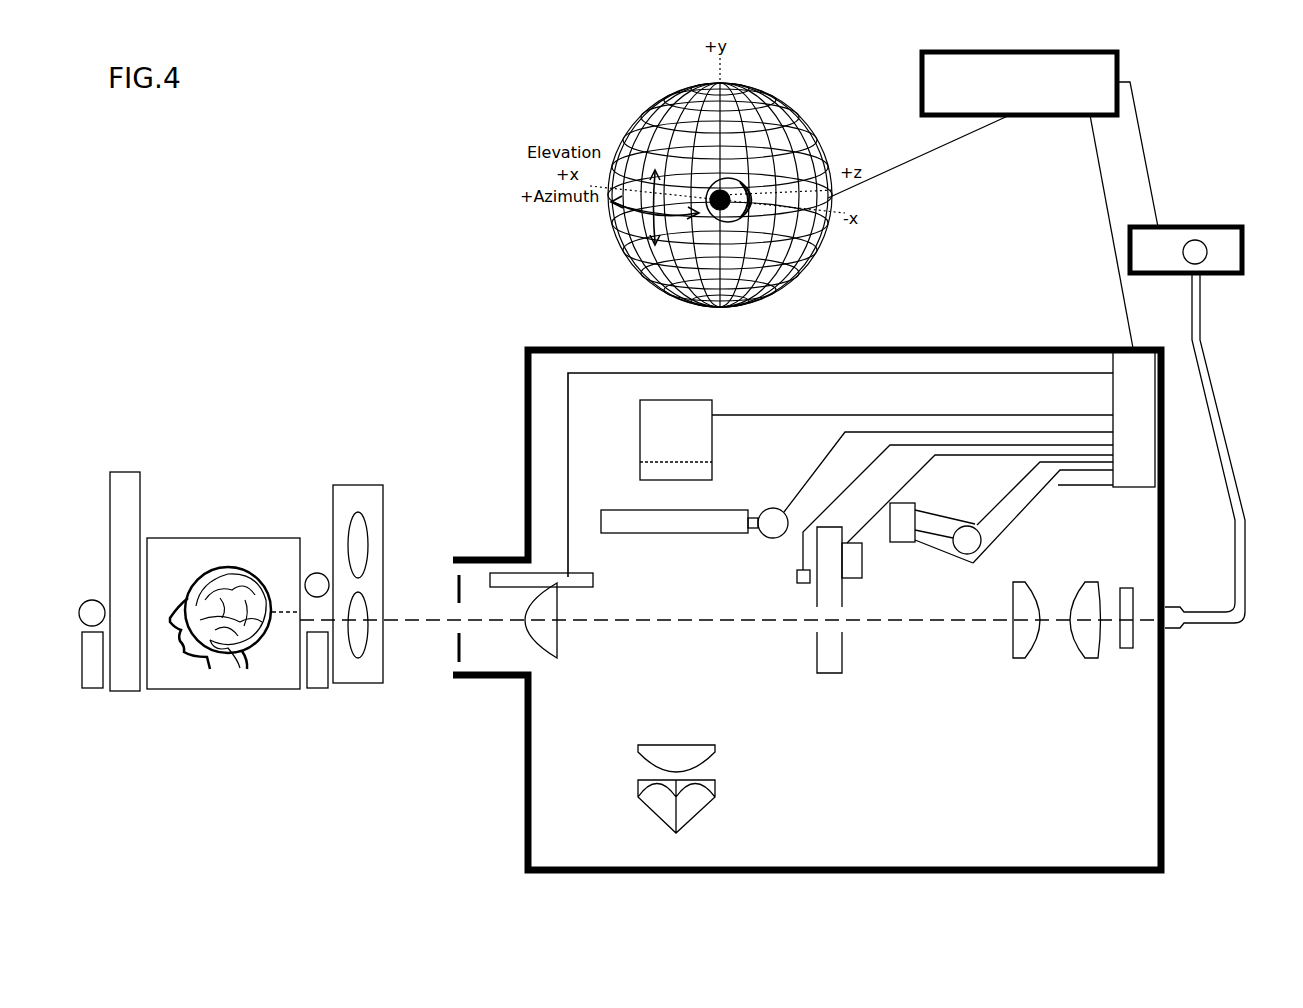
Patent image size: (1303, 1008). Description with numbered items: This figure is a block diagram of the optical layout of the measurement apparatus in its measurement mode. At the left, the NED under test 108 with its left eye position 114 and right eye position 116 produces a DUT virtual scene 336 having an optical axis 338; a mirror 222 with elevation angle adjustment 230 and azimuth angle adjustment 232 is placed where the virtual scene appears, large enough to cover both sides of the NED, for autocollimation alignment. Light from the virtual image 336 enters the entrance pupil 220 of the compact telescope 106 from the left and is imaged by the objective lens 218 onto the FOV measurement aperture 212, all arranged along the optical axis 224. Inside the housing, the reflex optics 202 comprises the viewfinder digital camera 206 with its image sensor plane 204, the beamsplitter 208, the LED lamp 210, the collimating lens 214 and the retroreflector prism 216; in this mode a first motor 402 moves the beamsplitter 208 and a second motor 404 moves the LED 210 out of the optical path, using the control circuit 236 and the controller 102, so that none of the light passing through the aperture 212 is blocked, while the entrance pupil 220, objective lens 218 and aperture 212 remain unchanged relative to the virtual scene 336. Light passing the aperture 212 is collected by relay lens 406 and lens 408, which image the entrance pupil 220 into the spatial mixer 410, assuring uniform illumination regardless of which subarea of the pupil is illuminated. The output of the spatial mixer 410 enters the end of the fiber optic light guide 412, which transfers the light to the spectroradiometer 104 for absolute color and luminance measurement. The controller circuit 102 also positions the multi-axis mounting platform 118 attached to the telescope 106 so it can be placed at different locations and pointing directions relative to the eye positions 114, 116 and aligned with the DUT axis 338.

The controller circuit 102 is at (1040, 200).
The spectroradiometer 104 is at (1186, 239).
The compact telescope 106 is at (1215, 851).
The NED under test 108 is at (341, 641).
The left eye position 114 is at (407, 673).
The right eye position 116 is at (377, 584).
The multi-axis mounting platform 118 is at (919, 156).
The reflex optics 202 is at (807, 610).
The image sensor plane 204 is at (656, 468).
The viewfinder digital camera 206 is at (856, 440).
The beamsplitter 208 is at (856, 494).
The LED lamp 210 is at (925, 535).
The FOV measurement aperture 212 is at (807, 600).
The collimating lens 214 is at (697, 756).
The retroreflector prism 216 is at (697, 803).
The objective lens 218 is at (551, 633).
The entrance pupil 220 is at (436, 618).
The mirror 222 is at (127, 568).
The optical axis 224 is at (536, 619).
The elevation angle adjustment 230 is at (85, 601).
The azimuth angle adjustment 232 is at (84, 675).
The control circuit 236 is at (1134, 432).
The DUT virtual scene 336 is at (223, 631).
The optical axis of the DUT 338 is at (229, 608).
The first motor 402 is at (969, 516).
The second motor 404 is at (1029, 512).
The relay lens 406 is at (1021, 630).
The relay lens 408 is at (1081, 630).
The spatial mixer 410 is at (1134, 627).
The fiber optic light guide 412 is at (1001, 462).